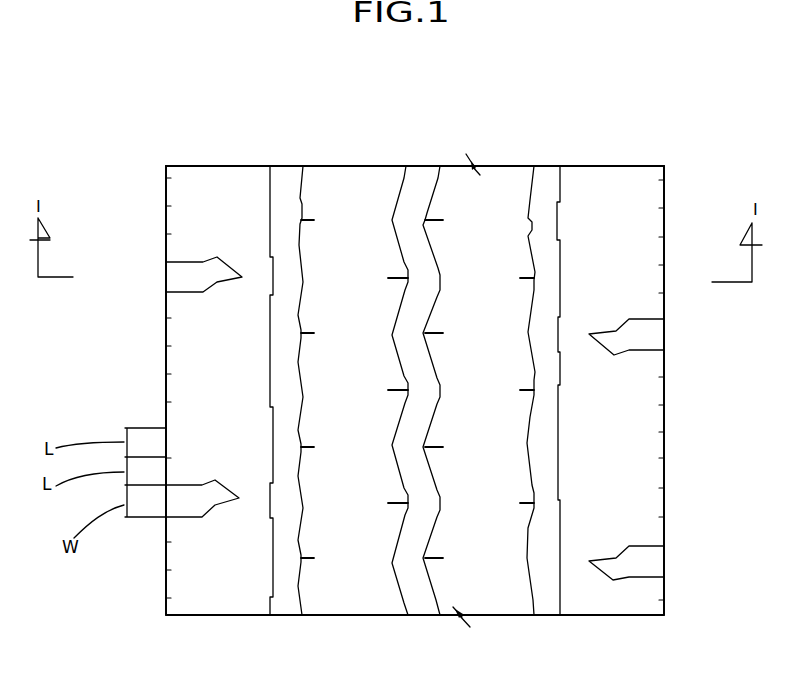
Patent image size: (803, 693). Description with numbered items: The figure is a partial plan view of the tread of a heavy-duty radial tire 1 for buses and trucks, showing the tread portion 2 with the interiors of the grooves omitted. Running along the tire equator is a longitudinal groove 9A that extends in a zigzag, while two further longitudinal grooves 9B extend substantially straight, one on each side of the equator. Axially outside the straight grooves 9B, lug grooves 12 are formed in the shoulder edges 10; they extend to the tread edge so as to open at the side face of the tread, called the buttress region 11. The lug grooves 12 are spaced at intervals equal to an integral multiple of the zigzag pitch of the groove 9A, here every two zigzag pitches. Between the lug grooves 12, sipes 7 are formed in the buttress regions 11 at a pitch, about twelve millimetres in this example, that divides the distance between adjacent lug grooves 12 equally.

The tire 1 is at (676, 111).
The tread portion 2 is at (615, 148).
The sipes 7 is at (165, 424).
The zigzag longitudinal groove 9A is at (414, 174).
The straight longitudinal grooves 9B is at (282, 177).
The shoulder edges 10 is at (166, 192).
The buttress region 11 is at (150, 534).
The lug grooves 12 is at (177, 280).